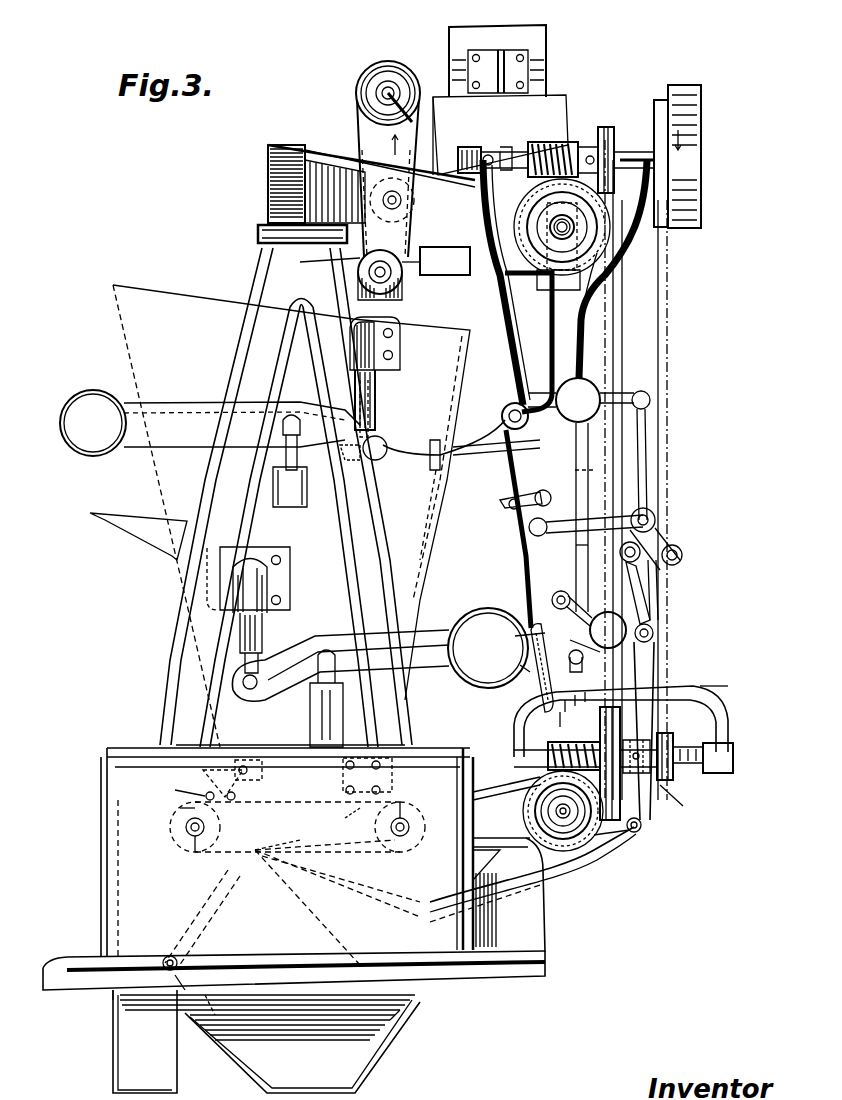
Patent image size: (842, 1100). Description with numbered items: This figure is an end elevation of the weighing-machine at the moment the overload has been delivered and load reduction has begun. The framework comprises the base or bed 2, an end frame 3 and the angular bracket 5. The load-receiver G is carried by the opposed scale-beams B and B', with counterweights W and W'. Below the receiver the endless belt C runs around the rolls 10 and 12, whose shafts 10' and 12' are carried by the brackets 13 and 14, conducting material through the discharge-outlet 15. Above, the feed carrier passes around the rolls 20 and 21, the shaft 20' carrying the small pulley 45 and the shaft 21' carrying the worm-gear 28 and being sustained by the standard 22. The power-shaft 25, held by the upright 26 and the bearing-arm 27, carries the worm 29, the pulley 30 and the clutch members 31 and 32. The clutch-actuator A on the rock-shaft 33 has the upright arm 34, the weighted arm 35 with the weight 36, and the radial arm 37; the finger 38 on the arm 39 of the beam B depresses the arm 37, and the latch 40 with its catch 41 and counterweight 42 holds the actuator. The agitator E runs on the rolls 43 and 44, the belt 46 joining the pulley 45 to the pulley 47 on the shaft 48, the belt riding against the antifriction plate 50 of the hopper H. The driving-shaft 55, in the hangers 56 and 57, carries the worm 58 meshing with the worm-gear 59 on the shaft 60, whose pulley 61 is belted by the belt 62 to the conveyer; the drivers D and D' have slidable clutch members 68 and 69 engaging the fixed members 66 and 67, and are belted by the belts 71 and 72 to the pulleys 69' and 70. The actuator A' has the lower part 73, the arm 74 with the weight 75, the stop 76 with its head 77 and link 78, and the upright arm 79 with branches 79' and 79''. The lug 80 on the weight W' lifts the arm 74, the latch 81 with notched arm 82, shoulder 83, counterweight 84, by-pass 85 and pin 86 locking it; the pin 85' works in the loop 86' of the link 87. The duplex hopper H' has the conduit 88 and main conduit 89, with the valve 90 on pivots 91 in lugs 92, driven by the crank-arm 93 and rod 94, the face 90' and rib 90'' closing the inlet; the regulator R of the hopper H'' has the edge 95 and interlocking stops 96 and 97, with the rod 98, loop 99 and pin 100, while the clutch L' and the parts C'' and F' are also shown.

The supporting base or bed 2 is at (112, 857).
The end frame 3 is at (222, 476).
The angular bracket 5 is at (268, 190).
The supporting-roll 10 is at (212, 827).
The shaft of roll 10' is at (189, 859).
The supporting-roll 12 is at (392, 838).
The shaft of roll 12' is at (421, 800).
The supporting-bracket 13 is at (205, 770).
The bracket 14 is at (390, 782).
The discharge-outlet 15 is at (245, 765).
The supporting roll or drum 20 is at (387, 363).
The shaft of roll 20' is at (352, 275).
The supporting roll or drum 21 is at (574, 234).
The shaft of rear roll 21' is at (624, 237).
The standard 22 is at (590, 456).
The power-shaft 25 is at (512, 148).
The upright 26 is at (592, 246).
The bearing-arm 27 is at (460, 147).
The worm-gear 28 is at (620, 290).
The worm 29 is at (572, 140).
The pulley 30 is at (684, 86).
The slidable clutch member 31 is at (489, 153).
The clutch member 32 is at (535, 142).
The transverse rock-shaft 33 is at (508, 408).
The upright arm 34 is at (500, 303).
The arm 35 is at (550, 390).
The weight 36 is at (592, 390).
The radial arm 37 is at (472, 445).
The projection or finger 38 is at (408, 440).
The arm 39 is at (312, 420).
The detent or latch 40 is at (500, 503).
The catch 41 is at (514, 497).
The counterweight 42 is at (590, 485).
The roll 43 is at (388, 85).
The roll 44 is at (380, 182).
The small pulley 45 is at (335, 262).
The belt 46 is at (357, 120).
The pulley 47 is at (361, 85).
The shaft 48 is at (405, 90).
The antifriction plate 50 is at (360, 154).
The driving-shaft 55 is at (696, 745).
The hanger 56 is at (540, 725).
The hanger 57 is at (722, 712).
The worm 58 is at (540, 770).
The worm-gear 59 is at (596, 836).
The shaft 60 is at (568, 820).
The pulley 61 is at (549, 832).
The belt 62 is at (520, 846).
The fixed clutch member 66 is at (527, 812).
The fixed clutch member 67 is at (733, 760).
The slidable clutch member 68 is at (611, 707).
The slidable clutch member 69 is at (688, 723).
The small pulley 69' is at (613, 136).
The pulley 70 is at (655, 120).
The belt 71 is at (614, 340).
The belt 72 is at (667, 333).
The downwardly-projecting part 73 is at (655, 670).
The arm 74 is at (655, 633).
The weight 75 is at (615, 623).
The stop 76 is at (648, 470).
The head 77 is at (655, 516).
The link 78 is at (564, 525).
The upright arm 79 is at (675, 593).
The branch 79' is at (663, 540).
The branch 79'' is at (697, 548).
The projection or lug 80 is at (515, 640).
The latch 81 is at (582, 548).
The notched arm 82 is at (606, 613).
The shoulder 83 is at (552, 599).
The counterweight 84 is at (588, 600).
The by-pass 85 is at (602, 659).
The pin 85' is at (500, 671).
The pin 86 is at (581, 676).
The longitudinal loop 86' is at (514, 670).
The link 87 is at (523, 548).
The conduit 88 is at (130, 1023).
The main conduit 89 is at (392, 1026).
The deflector or valve 90 is at (202, 919).
The oblique face 90' is at (167, 832).
The angular rib 90'' is at (167, 813).
The pivot 91 is at (164, 958).
The lug or ear 92 is at (180, 969).
The crank-arm 93 is at (113, 996).
The connecting-rod 94 is at (516, 882).
The lower deflected edge 95 is at (217, 972).
The interlocking stop 96 is at (348, 752).
The interlocking stop 97 is at (345, 846).
The connecting-rod 98 is at (428, 498).
The loop 99 is at (436, 472).
The pin 100 is at (388, 456).
The clutch-actuator A is at (303, 492).
The clutch-actuator A' is at (672, 598).
The scale-beam B is at (242, 424).
The scale-beam B' is at (340, 665).
The endless belt conveyer C is at (297, 827).
The collar C'' is at (506, 145).
The driver pulley D is at (644, 828).
The driver pulley D' is at (679, 804).
The endless agitator E is at (386, 145).
The block F' is at (436, 261).
The load-receiver G is at (166, 516).
The supply hopper H is at (500, 135).
The duplex discharge-hopper H' is at (497, 51).
The discharge-hopper H'' is at (270, 1044).
The clutch L' is at (690, 774).
The regulator R is at (337, 902).
The counterweight W is at (93, 413).
The counterweight W' is at (484, 637).